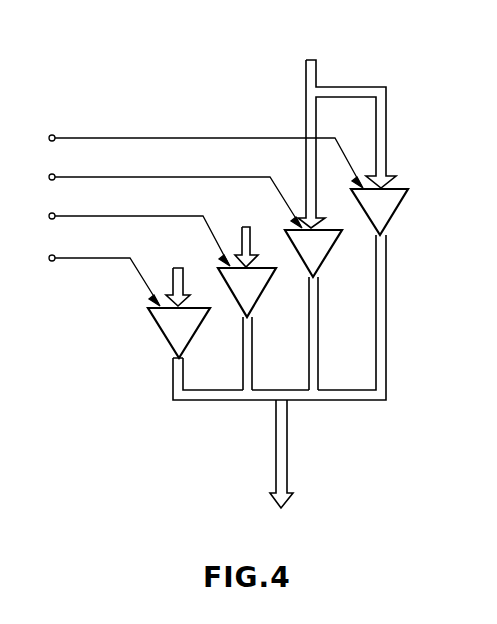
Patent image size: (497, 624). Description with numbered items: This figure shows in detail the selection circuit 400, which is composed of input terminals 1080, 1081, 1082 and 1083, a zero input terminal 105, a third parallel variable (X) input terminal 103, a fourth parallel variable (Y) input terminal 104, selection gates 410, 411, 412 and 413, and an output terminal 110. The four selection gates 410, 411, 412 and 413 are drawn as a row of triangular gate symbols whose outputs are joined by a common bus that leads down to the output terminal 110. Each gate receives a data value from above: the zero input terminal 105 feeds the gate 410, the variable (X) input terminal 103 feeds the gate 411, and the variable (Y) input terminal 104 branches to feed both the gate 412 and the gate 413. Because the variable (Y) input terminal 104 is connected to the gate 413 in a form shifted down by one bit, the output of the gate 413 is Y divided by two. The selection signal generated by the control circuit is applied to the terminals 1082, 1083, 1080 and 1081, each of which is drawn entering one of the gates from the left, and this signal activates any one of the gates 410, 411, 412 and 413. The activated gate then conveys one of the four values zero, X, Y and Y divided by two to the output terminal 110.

The selection circuit 400 is at (437, 153).
The fourth parallel variable (Y) input terminal 104 is at (310, 58).
The zero input terminal 105 is at (191, 255).
The third parallel variable (X) input terminal 103 is at (260, 212).
The output terminal 110 is at (283, 504).
The selection gate 410 is at (196, 333).
The selection gate 411 is at (263, 294).
The selection gate 412 is at (331, 250).
The selection gate 413 is at (396, 212).
The input terminal 1080 is at (54, 213).
The input terminal 1081 is at (54, 255).
The input terminal 1082 is at (54, 135).
The input terminal 1083 is at (54, 174).